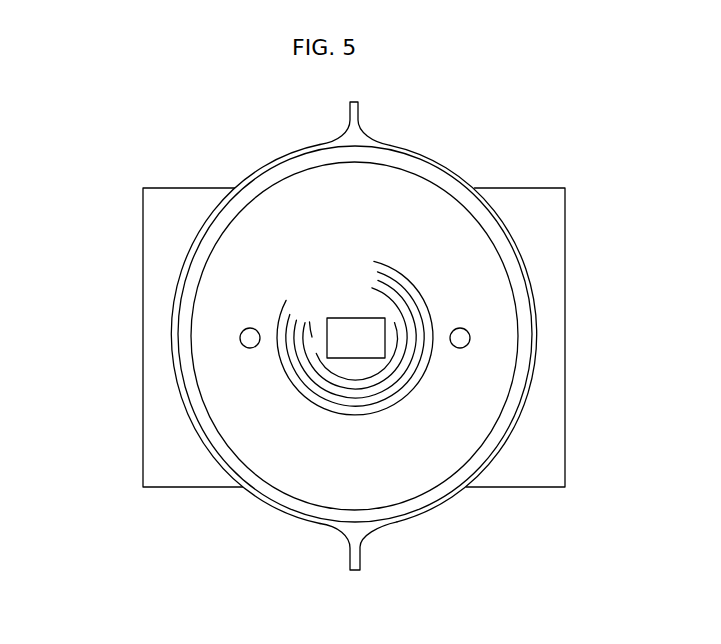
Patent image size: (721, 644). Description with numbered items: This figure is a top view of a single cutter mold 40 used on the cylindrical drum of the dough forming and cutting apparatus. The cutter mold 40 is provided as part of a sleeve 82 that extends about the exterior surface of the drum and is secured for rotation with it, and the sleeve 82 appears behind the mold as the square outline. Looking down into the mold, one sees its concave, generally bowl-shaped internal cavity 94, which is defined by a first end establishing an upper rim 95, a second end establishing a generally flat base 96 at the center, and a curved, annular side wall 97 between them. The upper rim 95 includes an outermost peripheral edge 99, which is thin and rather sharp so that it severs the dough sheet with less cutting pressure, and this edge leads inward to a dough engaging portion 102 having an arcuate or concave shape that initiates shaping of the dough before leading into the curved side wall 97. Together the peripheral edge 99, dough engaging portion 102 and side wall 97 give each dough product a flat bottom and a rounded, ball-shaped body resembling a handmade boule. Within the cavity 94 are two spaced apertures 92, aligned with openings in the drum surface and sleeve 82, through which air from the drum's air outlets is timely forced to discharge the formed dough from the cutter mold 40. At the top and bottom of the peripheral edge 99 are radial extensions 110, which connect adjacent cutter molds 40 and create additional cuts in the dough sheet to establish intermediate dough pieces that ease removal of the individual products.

The cutter mold 40 is at (263, 143).
The sleeve 82 is at (545, 450).
The apertures 92 is at (240, 332).
The internal cavity 94 is at (314, 353).
The upper rim 95 is at (258, 516).
The base 96 is at (341, 340).
The side wall 97 is at (437, 162).
The peripheral edge 99 is at (180, 405).
The dough engaging portion 102 is at (487, 218).
The radial extensions 110 is at (355, 108).